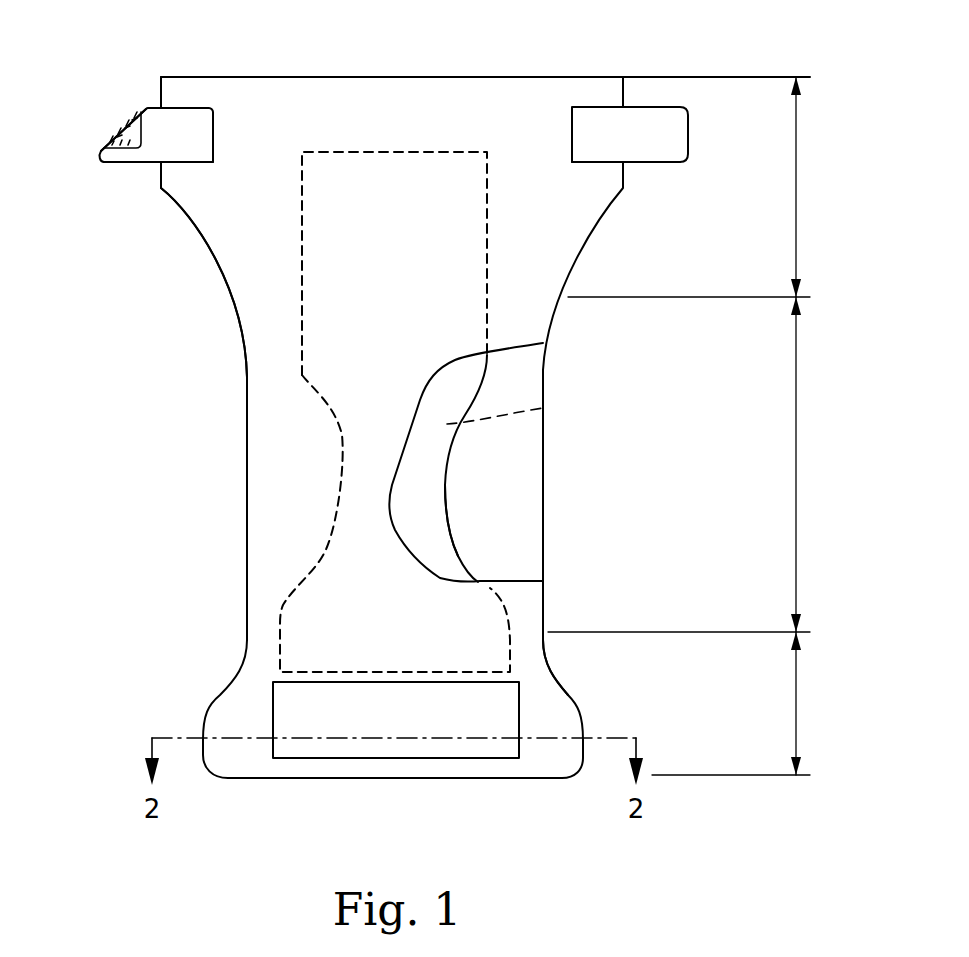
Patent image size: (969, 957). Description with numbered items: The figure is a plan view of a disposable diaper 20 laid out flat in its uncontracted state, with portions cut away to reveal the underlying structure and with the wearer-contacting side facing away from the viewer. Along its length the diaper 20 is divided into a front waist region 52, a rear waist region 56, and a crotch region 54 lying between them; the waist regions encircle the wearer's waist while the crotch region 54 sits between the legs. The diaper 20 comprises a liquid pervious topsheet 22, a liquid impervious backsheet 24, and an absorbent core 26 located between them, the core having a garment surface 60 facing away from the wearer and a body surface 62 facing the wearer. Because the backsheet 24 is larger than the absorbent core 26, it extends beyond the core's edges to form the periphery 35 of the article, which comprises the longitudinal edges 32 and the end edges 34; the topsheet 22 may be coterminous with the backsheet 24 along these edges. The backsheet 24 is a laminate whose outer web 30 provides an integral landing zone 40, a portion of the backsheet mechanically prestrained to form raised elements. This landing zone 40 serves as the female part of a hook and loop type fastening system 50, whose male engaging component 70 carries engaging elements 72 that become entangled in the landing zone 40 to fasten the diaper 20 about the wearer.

The diaper 20 is at (160, 398).
The liquid pervious topsheet 22 is at (518, 375).
The liquid impervious backsheet 24 is at (290, 548).
The absorbent core 26 is at (427, 473).
The outer web 30 is at (207, 218).
The longitudinal edges 32 is at (247, 472).
The end edges 34 is at (466, 77).
The periphery 35 is at (543, 622).
The landing zone 40 is at (318, 748).
The hook and loop type fastening system 50 is at (100, 158).
The front waist region 52 is at (797, 700).
The crotch region 54 is at (797, 465).
The rear waist region 56 is at (797, 185).
The garment surface 60 is at (427, 502).
The body surface 62 is at (543, 408).
The engaging component 70 is at (134, 160).
The engaging elements 72 is at (112, 145).